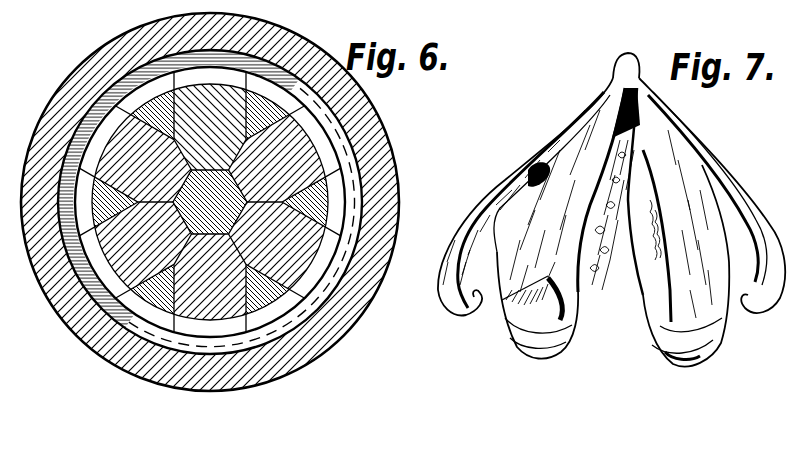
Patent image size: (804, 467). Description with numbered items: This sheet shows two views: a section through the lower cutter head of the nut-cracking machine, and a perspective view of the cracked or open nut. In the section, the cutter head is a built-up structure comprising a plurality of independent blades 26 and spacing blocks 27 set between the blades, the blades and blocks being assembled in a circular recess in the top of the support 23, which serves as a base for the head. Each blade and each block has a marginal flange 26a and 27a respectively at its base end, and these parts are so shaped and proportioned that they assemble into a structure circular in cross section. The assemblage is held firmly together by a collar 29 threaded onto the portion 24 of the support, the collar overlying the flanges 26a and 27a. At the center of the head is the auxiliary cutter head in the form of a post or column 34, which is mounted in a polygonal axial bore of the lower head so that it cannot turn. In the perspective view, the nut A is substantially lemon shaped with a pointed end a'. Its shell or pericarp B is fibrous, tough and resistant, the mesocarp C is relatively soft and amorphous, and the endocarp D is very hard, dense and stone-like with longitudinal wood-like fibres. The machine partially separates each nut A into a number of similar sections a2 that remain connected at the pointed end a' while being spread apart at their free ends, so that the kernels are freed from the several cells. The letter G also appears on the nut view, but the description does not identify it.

In FIG. 6, the support 23 is at (293, 317).
In FIG. 6, the threaded portion of the support 24 is at (242, 367).
In FIG. 6, the blade 26 is at (212, 120).
In FIG. 6, the marginal flange of blade 26a is at (67, 327).
In FIG. 6, the spacing block 27 is at (288, 88).
In FIG. 6, the marginal flange of spacing block 27a is at (147, 308).
In FIG. 6, the collar 29 is at (382, 142).
In FIG. 6, the post 34 is at (328, 232).
In FIG. 7, the nut A is at (553, 132).
In FIG. 7, the pointed end of the nut a' is at (640, 214).
In FIG. 7, the section of the nut a2 is at (688, 238).
In FIG. 7, the central strip G is at (645, 258).
In FIG. 7, the shell or pericarp B is at (503, 300).
In FIG. 7, the mesocarp C is at (518, 345).
In FIG. 7, the endocarp D is at (552, 358).